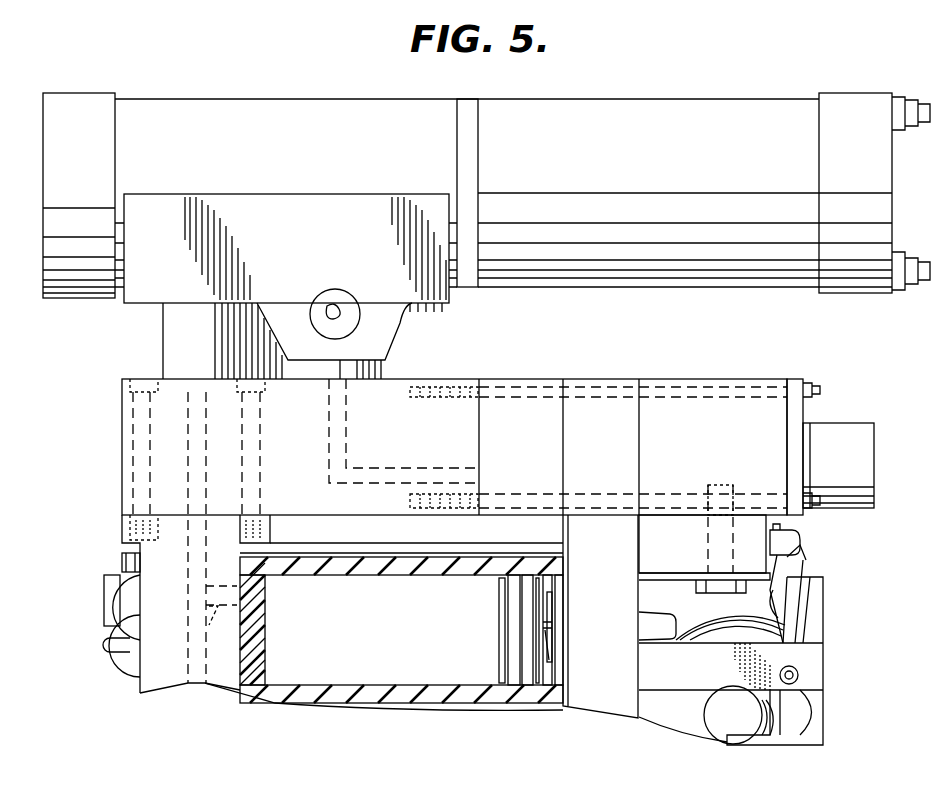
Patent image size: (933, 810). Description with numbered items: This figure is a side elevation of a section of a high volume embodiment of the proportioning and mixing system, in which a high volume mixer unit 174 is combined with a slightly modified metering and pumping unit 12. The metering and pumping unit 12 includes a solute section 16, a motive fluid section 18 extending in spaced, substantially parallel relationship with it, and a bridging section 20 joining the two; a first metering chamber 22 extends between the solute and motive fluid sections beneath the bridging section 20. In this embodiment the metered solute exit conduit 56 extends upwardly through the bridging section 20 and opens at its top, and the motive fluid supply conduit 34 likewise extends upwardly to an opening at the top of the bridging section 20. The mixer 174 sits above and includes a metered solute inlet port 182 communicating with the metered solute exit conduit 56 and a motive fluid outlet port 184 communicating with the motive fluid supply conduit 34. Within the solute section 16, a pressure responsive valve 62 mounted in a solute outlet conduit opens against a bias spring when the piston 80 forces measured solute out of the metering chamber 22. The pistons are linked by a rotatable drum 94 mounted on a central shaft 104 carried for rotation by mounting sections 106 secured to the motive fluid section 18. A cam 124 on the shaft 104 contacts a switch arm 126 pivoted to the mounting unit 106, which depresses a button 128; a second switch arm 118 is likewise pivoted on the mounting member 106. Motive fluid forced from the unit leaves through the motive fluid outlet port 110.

The metering and pumping unit 12 is at (690, 370).
The solute section 16 is at (160, 487).
The motive fluid section 18 is at (610, 587).
The bridging section 20 is at (536, 450).
The first metering chamber 22 is at (380, 627).
The motive fluid supply conduit 34 is at (386, 465).
The metered solute exit conduit 56 is at (215, 452).
The pressure responsive valve 62 is at (208, 626).
The piston 80 is at (512, 618).
The rotatable drum 94 is at (815, 712).
The central shaft 104 is at (728, 697).
The mounting section 106 is at (690, 702).
The motive fluid outlet port 110 is at (850, 432).
The switch arm 118 is at (790, 569).
The cam 124 is at (778, 720).
The switch arm 126 is at (803, 600).
The button 128 is at (796, 544).
The high volume mixer unit 174 is at (662, 169).
The metered solute inlet port 182 is at (173, 344).
The motive fluid outlet port 184 is at (383, 367).